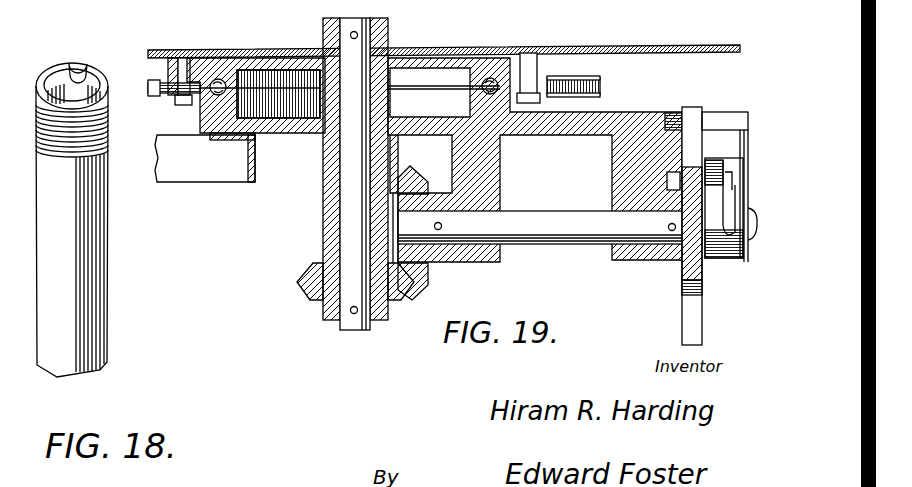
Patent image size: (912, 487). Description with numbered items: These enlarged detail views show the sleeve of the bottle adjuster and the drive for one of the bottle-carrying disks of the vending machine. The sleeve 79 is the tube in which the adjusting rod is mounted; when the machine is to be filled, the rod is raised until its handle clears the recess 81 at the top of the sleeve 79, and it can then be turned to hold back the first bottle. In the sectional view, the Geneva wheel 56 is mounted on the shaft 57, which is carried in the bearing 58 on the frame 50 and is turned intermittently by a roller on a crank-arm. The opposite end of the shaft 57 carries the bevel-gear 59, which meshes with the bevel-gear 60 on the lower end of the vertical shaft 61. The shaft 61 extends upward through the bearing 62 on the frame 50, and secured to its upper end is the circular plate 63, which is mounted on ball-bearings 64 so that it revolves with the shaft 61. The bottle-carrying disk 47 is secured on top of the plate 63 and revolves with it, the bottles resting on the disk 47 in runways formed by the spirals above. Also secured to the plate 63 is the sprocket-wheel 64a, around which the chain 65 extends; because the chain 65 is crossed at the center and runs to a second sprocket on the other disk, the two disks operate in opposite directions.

In FIG. 19, the disk 47 is at (486, 51).
In FIG. 19, the frame 50 is at (630, 120).
In FIG. 19, the Geneva wheel 56 is at (690, 301).
In FIG. 19, the shaft 57 is at (590, 238).
In FIG. 19, the bearing 58 is at (504, 193).
In FIG. 19, the bevel-gear 59 is at (425, 280).
In FIG. 19, the bevel-gear 60 is at (305, 296).
In FIG. 19, the shaft 61 is at (350, 209).
In FIG. 19, the bearing 62 is at (230, 163).
In FIG. 19, the circular plate 63 is at (291, 62).
In FIG. 19, the ball-bearings 64 is at (222, 80).
In FIG. 19, the sprocket-wheel 64a is at (168, 100).
In FIG. 19, the chain 65 is at (600, 89).
In FIG. 18, the sleeve 79 is at (100, 220).
In FIG. 18, the recess 81 is at (78, 62).